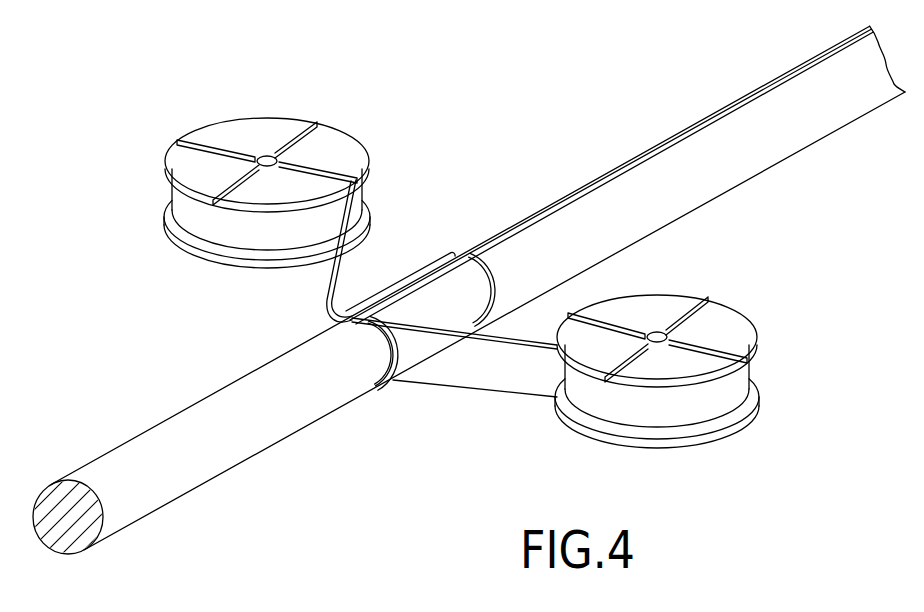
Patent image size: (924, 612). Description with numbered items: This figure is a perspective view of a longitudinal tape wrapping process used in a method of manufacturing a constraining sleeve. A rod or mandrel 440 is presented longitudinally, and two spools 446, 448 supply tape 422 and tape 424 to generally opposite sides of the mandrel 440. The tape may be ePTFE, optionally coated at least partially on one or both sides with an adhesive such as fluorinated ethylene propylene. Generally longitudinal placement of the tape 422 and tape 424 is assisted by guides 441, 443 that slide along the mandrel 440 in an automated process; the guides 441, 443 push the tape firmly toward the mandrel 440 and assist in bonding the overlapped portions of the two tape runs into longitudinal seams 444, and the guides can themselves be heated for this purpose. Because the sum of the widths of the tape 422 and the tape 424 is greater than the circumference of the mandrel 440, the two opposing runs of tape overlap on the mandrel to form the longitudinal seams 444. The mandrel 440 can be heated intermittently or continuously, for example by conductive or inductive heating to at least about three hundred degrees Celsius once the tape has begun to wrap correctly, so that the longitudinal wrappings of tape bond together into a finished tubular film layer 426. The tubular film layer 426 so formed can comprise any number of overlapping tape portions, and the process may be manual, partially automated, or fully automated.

The mandrel 440 is at (155, 497).
The tubular film layer 426 is at (777, 160).
The longitudinal seams 444 is at (727, 107).
The guide 441 is at (441, 262).
The tape 422 is at (327, 292).
The guide 443 is at (478, 284).
The tape 424 is at (481, 387).
The spool 446 is at (230, 130).
The spool 448 is at (760, 341).